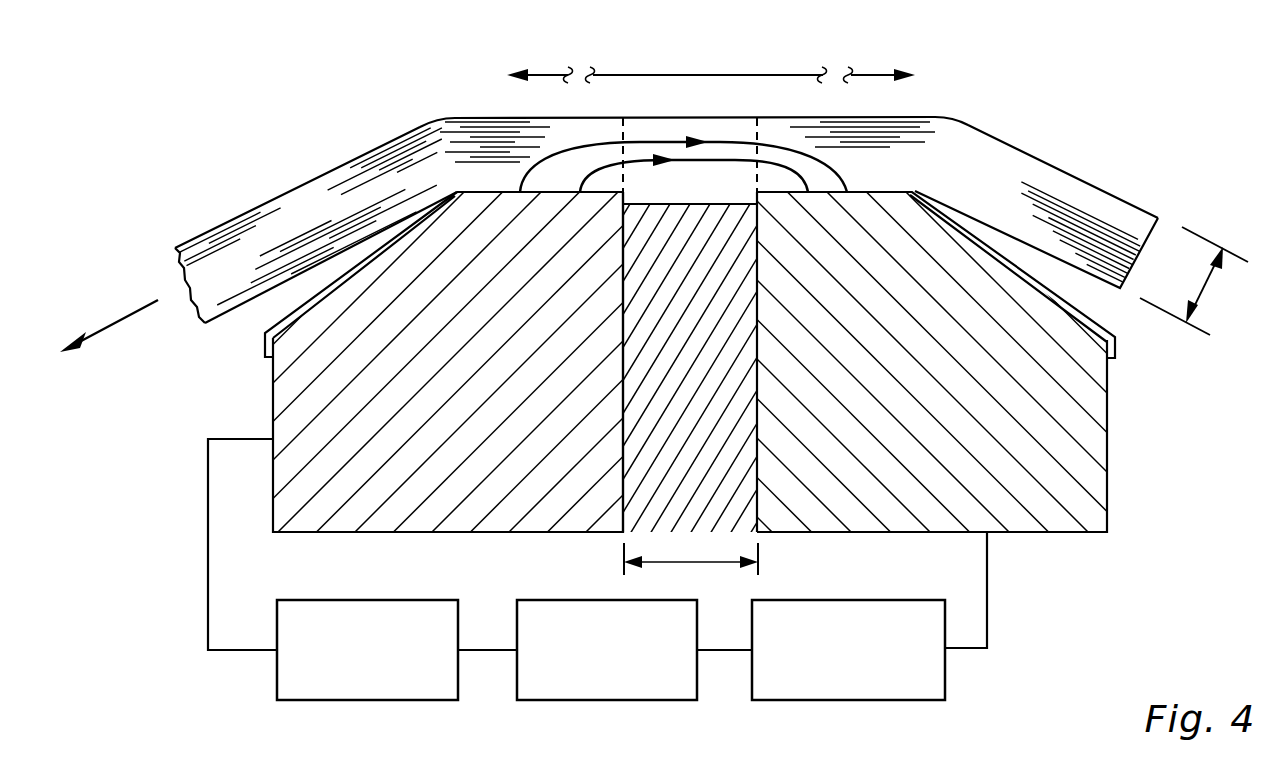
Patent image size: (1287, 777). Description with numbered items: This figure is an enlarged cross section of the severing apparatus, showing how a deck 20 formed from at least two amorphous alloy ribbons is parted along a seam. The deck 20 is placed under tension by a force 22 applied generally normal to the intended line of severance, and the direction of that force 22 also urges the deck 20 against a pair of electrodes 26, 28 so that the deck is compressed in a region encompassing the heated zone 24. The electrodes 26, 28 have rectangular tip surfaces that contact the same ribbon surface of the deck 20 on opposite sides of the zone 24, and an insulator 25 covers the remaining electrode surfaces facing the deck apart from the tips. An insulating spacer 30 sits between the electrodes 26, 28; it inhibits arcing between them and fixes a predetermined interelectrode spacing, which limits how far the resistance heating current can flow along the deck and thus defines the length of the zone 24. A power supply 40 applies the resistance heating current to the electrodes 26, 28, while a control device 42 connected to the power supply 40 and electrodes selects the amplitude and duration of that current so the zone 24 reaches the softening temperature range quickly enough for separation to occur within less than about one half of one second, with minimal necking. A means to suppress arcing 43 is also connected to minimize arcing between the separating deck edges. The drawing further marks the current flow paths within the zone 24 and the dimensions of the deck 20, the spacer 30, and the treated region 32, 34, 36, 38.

The deck 20 is at (980, 122).
The force 22 is at (107, 327).
The zone 24 is at (672, 133).
The insulator 25 is at (262, 343).
The electrode 26 is at (462, 525).
The electrode 28 is at (818, 523).
The insulating spacer 30 is at (612, 537).
The treatment zone width 32 is at (713, 73).
The film thickness 34 is at (1207, 300).
The central electrode width 36 is at (695, 563).
The inner arc 38 is at (727, 140).
The power supply 40 is at (557, 703).
The control device 42 is at (287, 703).
The means to suppress arcing 43 is at (872, 700).